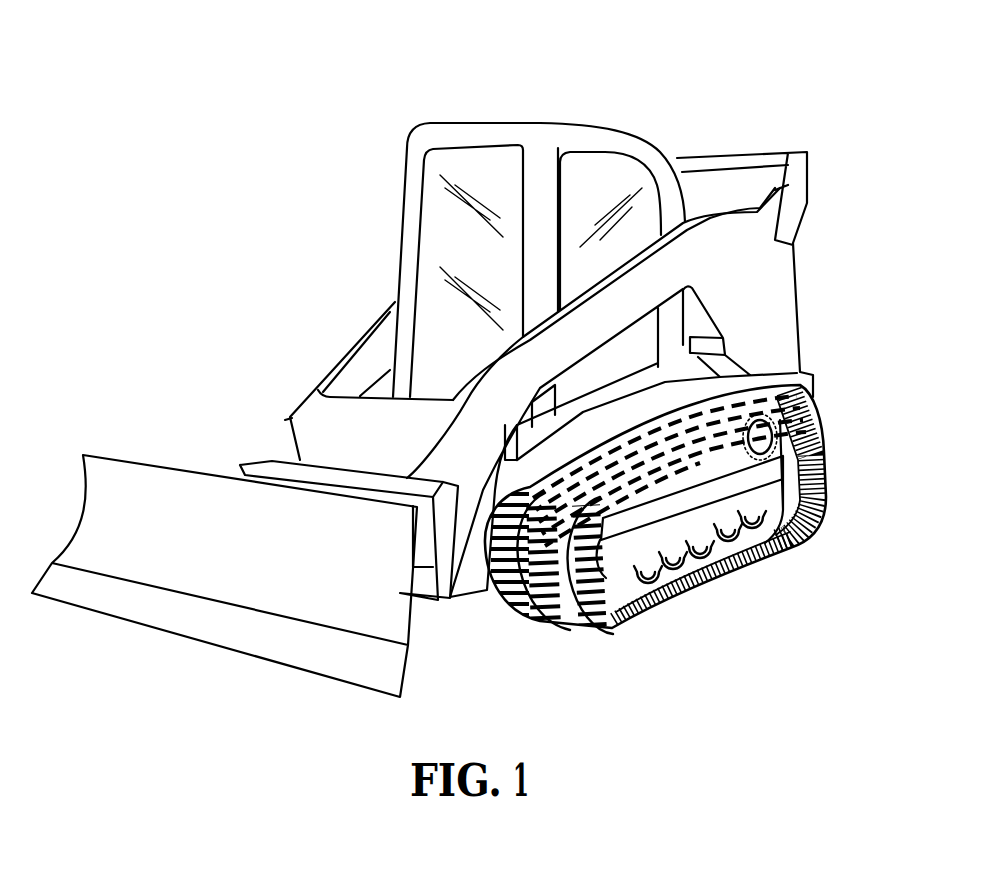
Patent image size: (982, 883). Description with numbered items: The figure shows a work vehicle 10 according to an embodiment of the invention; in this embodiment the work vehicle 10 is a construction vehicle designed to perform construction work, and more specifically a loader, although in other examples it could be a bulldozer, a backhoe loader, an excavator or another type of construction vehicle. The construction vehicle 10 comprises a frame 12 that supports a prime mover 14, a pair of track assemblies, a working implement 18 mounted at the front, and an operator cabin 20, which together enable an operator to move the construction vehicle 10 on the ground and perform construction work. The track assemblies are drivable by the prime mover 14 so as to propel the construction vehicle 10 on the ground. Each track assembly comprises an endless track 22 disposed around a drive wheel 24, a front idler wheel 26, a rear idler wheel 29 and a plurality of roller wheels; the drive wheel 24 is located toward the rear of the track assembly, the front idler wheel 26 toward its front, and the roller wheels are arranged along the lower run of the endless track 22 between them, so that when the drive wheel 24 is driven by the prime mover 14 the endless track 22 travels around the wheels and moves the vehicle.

The work vehicle 10 is at (288, 83).
The frame 12 is at (660, 370).
The prime mover 14 is at (610, 420).
The working implement 18 is at (76, 493).
The operator cabin 20 is at (433, 223).
The endless track 22 is at (557, 567).
The drive wheel 24 is at (762, 437).
The front idler wheel 26 is at (597, 583).
The rear idler wheel 29 is at (790, 496).